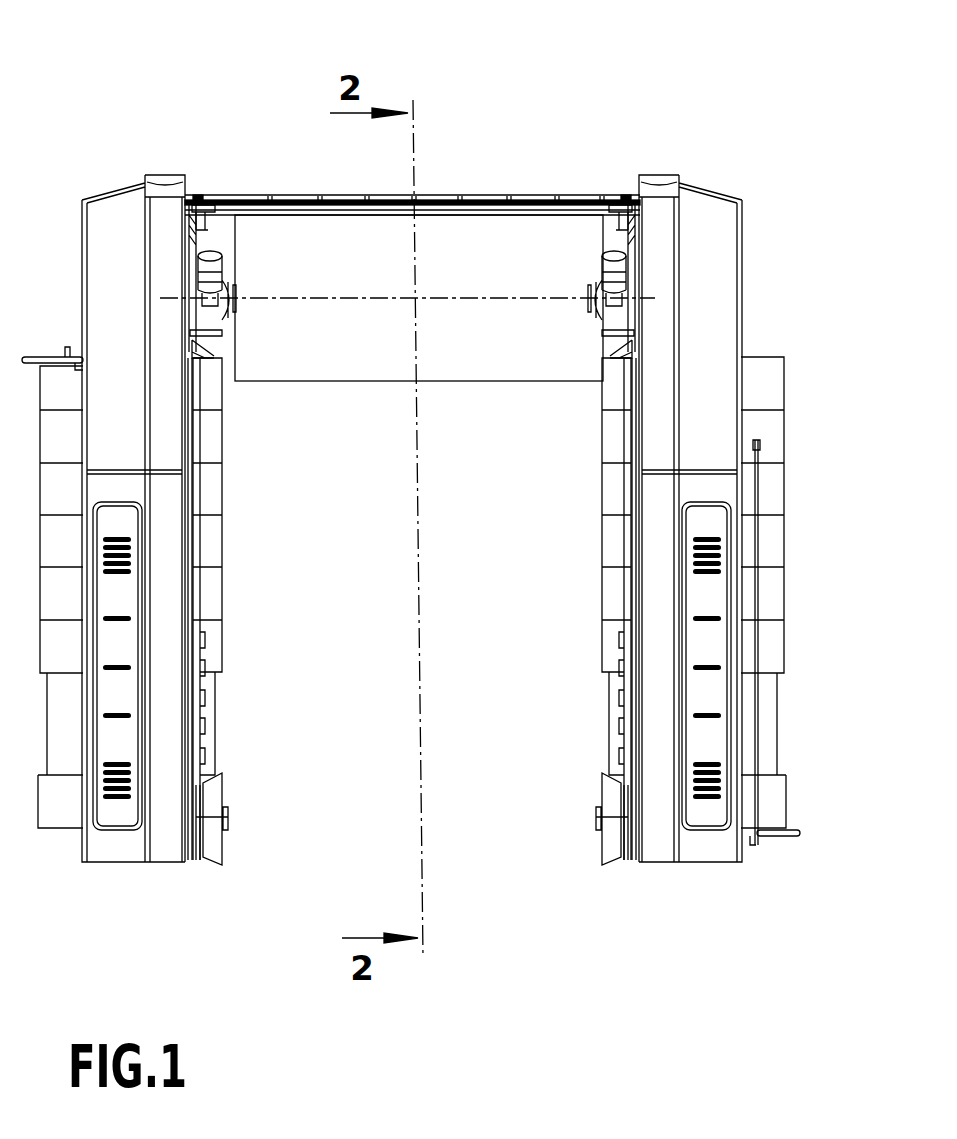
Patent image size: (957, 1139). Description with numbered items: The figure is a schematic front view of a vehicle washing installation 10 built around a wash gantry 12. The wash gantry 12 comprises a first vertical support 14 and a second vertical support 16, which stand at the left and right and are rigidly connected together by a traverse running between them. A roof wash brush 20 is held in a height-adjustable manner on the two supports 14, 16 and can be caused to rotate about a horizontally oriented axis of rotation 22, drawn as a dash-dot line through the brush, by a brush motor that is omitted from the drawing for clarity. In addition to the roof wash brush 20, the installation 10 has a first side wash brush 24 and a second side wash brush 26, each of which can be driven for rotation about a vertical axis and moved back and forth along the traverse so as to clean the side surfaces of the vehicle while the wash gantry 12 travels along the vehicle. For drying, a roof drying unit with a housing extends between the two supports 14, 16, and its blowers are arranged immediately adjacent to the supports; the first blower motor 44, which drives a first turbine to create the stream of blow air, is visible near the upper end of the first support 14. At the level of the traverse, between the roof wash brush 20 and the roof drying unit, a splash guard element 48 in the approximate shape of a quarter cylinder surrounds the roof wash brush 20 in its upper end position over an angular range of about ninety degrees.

The vehicle washing installation 10 is at (607, 118).
The wash gantry 12 is at (734, 181).
The first vertical support 14 is at (173, 852).
The second vertical support 16 is at (653, 852).
The roof wash brush 20 is at (467, 383).
The axis of rotation 22 is at (310, 298).
The first side wash brush 24 is at (213, 595).
The second side wash brush 26 is at (610, 595).
The first blower motor 44 is at (214, 250).
The splash guard element 48 is at (210, 200).